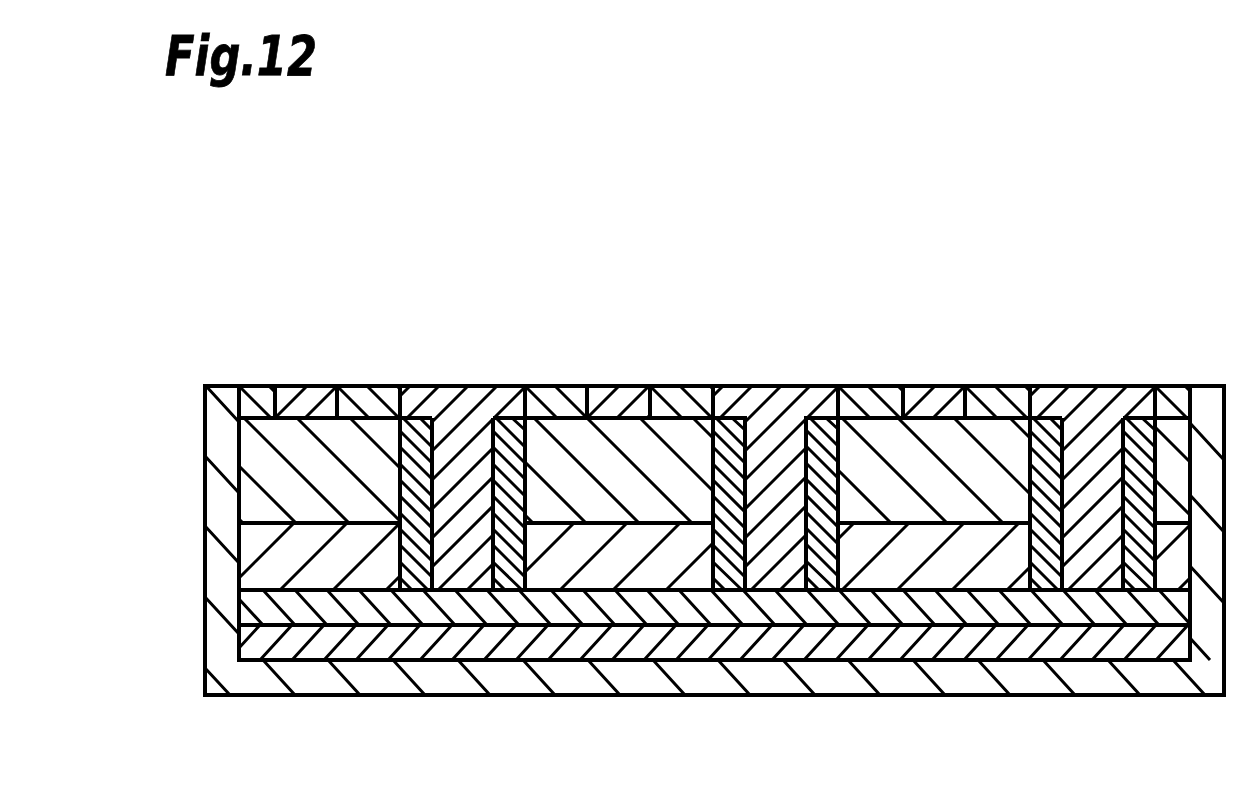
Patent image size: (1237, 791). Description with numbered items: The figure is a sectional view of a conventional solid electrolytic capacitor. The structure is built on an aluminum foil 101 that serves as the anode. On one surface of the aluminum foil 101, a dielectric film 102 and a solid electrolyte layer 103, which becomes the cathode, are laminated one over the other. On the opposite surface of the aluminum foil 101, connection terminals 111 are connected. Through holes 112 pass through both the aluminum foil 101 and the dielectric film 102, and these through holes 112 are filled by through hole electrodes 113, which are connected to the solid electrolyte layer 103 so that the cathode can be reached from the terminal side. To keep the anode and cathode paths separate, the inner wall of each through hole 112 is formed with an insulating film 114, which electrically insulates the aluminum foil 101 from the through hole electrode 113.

The aluminum foil 101 is at (995, 448).
The dielectric film 102 is at (995, 562).
The solid electrolyte layer 103 is at (932, 605).
The connection terminals 111 is at (622, 399).
The through holes 112 is at (735, 490).
The through hole electrodes 113 is at (806, 400).
The insulating film 114 is at (830, 466).